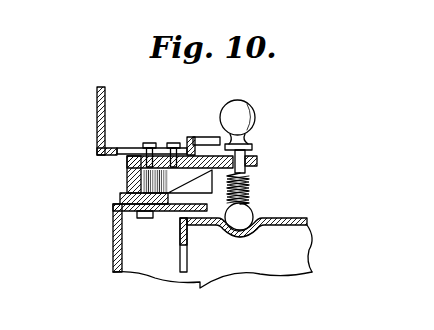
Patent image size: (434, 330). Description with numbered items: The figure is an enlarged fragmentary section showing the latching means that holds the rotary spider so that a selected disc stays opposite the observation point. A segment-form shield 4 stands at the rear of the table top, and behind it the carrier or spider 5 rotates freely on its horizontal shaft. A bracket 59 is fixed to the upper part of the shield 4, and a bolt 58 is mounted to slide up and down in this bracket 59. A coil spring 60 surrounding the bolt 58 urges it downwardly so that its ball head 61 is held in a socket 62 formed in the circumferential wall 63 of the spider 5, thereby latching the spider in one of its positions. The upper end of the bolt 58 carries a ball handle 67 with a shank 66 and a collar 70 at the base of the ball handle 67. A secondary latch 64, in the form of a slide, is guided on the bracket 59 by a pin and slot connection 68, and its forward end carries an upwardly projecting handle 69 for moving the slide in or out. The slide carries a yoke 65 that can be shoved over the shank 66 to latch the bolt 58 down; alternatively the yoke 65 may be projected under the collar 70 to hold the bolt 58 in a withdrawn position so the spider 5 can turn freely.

The shield 4 is at (113, 238).
The carrier or spider 5 is at (304, 266).
The bolt 58 is at (258, 161).
The bracket 59 is at (256, 152).
The coil spring 60 is at (250, 192).
The ball head 61 is at (254, 229).
The socket 62 is at (246, 234).
The circumferential wall 63 is at (302, 218).
The secondary latch 64 is at (172, 143).
The yoke 65 is at (207, 137).
The shank 66 is at (249, 139).
The ball handle 67 is at (250, 108).
The pin and slot connection 68 is at (147, 143).
The handle 69 is at (97, 103).
The collar 70 is at (254, 148).